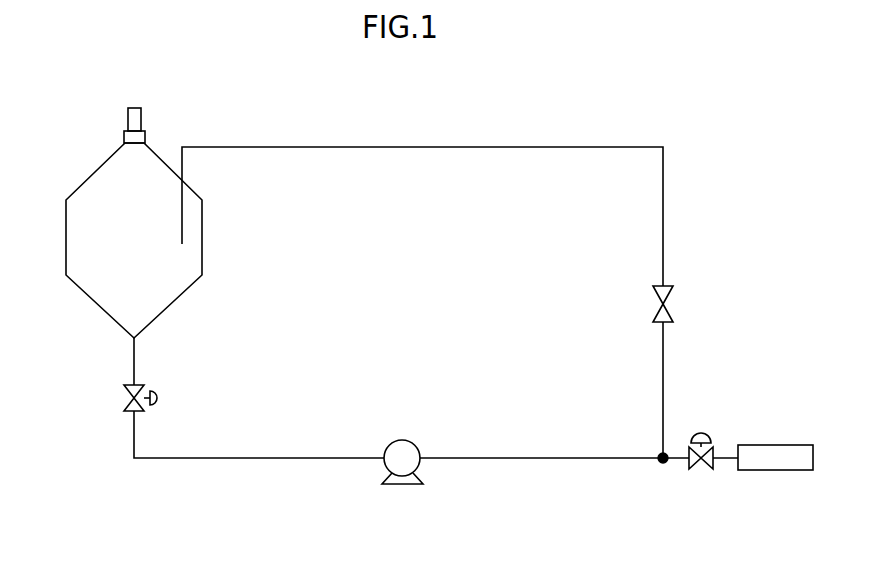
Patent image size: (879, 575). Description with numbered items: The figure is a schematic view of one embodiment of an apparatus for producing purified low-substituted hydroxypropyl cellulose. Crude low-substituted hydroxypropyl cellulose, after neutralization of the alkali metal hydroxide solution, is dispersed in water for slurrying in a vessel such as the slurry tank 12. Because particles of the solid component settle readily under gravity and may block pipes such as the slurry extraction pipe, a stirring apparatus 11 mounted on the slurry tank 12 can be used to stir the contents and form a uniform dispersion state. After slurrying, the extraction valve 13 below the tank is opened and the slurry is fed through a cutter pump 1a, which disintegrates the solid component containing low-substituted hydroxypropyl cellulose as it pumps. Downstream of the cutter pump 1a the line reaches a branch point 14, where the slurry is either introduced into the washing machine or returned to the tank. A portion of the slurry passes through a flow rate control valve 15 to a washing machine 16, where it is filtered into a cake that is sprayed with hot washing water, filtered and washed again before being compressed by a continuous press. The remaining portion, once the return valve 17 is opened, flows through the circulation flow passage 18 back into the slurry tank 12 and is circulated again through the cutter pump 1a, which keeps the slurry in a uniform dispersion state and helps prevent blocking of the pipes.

The cutter pump 1a is at (392, 442).
The stirring apparatus 11 is at (127, 121).
The slurry tank 12 is at (92, 300).
The extraction valve 13 is at (124, 392).
The branch point 14 is at (663, 467).
The flow rate control valve 15 is at (700, 432).
The washing machine 16 is at (767, 445).
The return valve 17 is at (653, 297).
The circulation flow passage 18 is at (663, 193).